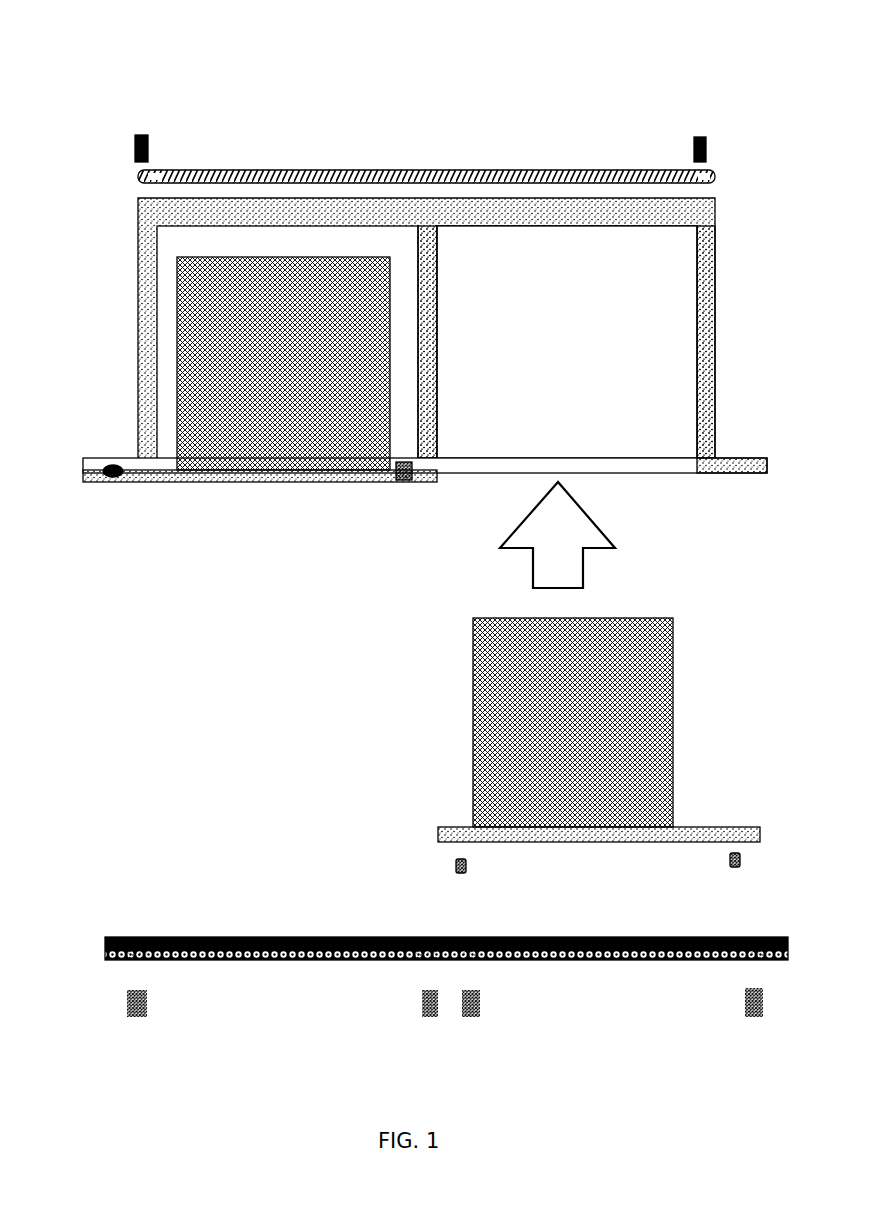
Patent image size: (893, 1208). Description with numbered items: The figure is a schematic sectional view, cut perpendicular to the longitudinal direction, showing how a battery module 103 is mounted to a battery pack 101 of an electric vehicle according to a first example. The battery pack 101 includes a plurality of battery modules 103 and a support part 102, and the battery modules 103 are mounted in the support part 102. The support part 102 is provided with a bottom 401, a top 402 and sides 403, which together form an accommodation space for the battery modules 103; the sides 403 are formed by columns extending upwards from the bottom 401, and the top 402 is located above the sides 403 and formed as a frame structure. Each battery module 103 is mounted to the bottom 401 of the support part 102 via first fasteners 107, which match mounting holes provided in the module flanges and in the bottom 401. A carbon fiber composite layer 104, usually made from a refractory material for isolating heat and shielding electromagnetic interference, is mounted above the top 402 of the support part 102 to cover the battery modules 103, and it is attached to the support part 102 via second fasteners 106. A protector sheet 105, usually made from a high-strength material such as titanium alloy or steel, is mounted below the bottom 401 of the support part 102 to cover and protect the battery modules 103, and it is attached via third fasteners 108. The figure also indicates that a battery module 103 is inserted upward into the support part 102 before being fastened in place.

The battery pack 101 is at (194, 81).
The support part 102 is at (138, 220).
The battery module 103 is at (183, 360).
The carbon fiber composite layer 104 is at (540, 168).
The protector sheet 105 is at (283, 960).
The second fastener 106 is at (133, 152).
The first fastener 107 is at (102, 458).
The third fastener 108 is at (147, 1015).
The bottom 401 is at (685, 465).
The top 402 is at (382, 222).
The side 403 is at (713, 360).